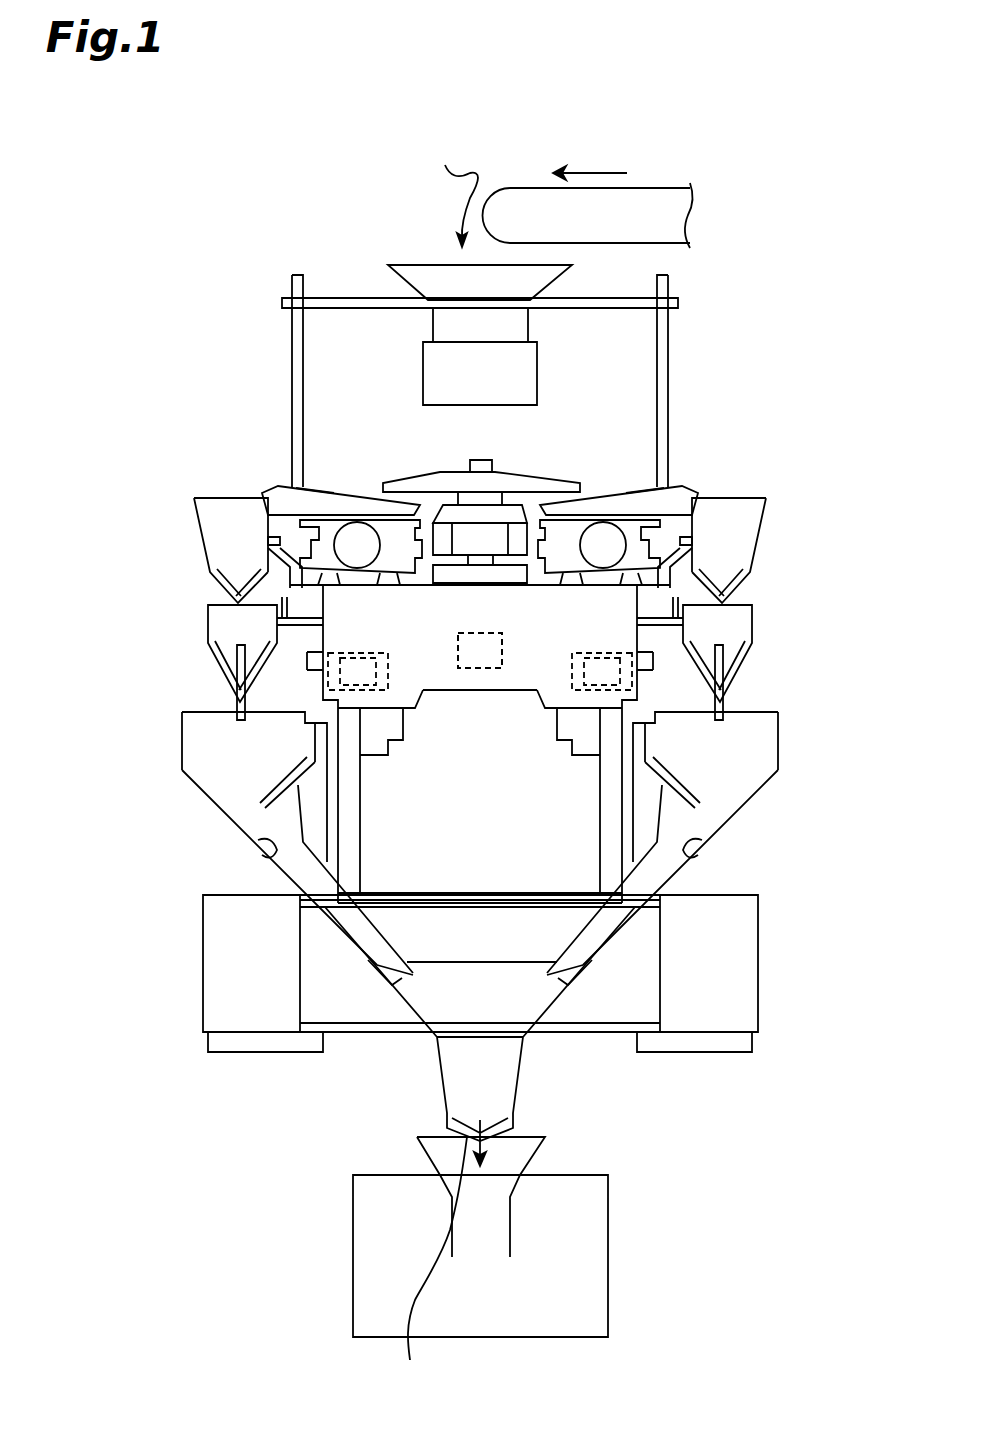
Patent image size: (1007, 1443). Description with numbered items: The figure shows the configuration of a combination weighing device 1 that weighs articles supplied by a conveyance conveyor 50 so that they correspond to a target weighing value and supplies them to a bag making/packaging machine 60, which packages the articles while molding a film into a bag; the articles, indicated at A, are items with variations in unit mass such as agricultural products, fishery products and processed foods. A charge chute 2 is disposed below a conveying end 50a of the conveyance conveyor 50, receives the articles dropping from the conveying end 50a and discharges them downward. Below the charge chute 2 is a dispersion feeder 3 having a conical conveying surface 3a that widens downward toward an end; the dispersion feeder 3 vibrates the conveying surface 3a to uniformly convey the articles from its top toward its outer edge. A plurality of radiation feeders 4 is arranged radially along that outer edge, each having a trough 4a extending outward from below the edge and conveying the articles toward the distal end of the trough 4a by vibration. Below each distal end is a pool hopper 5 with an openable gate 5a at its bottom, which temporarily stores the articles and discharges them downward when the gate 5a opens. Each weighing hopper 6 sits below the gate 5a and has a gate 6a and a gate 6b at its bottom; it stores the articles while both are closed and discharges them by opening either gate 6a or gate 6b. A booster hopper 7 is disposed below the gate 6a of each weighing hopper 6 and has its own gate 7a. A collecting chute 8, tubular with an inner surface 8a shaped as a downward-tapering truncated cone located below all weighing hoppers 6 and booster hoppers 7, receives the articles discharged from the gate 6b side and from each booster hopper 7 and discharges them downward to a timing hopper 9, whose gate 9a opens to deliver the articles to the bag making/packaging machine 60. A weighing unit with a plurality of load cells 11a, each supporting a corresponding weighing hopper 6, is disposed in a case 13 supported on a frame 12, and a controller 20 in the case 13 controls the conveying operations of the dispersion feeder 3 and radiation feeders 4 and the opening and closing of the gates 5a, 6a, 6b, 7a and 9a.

The combination weighing device 1 is at (232, 172).
The charge chute 2 is at (425, 270).
The dispersion feeder 3 is at (527, 483).
The conveying surface 3a is at (413, 477).
The radiation feeder 4 is at (275, 495).
The trough 4a is at (312, 497).
The pool hopper 5 is at (203, 519).
The gate 5a is at (215, 588).
The weighing hopper 6 is at (217, 620).
The gate 6a is at (243, 703).
The gate 6b is at (217, 670).
The booster hopper 7 is at (247, 737).
The gate 7a is at (270, 790).
The collecting chute 8 is at (232, 807).
The inner surface 8a is at (270, 858).
The timing hopper 9 is at (505, 1085).
The gate 9a is at (431, 1264).
The load cell 11a is at (577, 650).
The frame 12 is at (740, 945).
The case 13 is at (490, 678).
The controller 20 is at (475, 675).
The conveyance conveyor 50 is at (648, 190).
The conveying end 50a is at (488, 200).
The bag making/packaging machine 60 is at (595, 1238).
The articles A is at (453, 191).